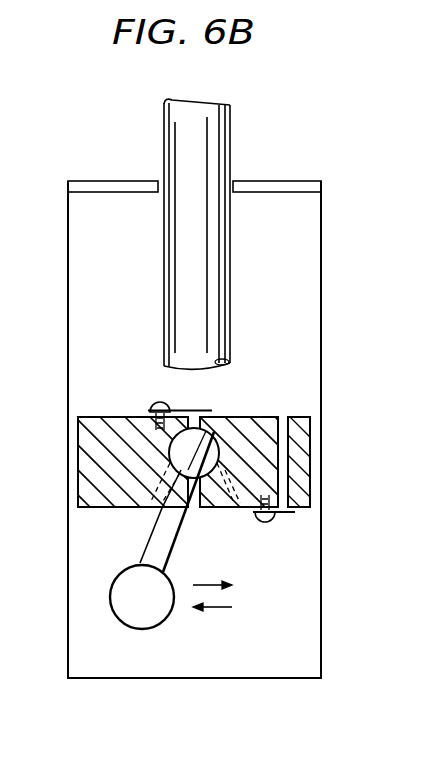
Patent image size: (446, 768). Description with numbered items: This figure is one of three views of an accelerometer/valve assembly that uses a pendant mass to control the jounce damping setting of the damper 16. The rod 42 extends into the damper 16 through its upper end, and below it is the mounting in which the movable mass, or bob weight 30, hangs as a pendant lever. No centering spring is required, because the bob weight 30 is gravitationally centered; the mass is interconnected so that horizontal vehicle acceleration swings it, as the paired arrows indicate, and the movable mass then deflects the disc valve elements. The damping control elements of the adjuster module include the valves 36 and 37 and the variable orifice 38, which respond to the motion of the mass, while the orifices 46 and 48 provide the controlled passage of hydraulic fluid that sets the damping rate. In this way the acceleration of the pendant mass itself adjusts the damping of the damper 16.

The damper 16 is at (322, 257).
The rod 42 is at (220, 153).
The valve 36 is at (190, 405).
The valve 37 is at (290, 516).
The variable orifice 38 is at (160, 503).
The orifice 46 is at (193, 485).
The orifice 48 is at (290, 487).
The bob weight 30 is at (125, 598).